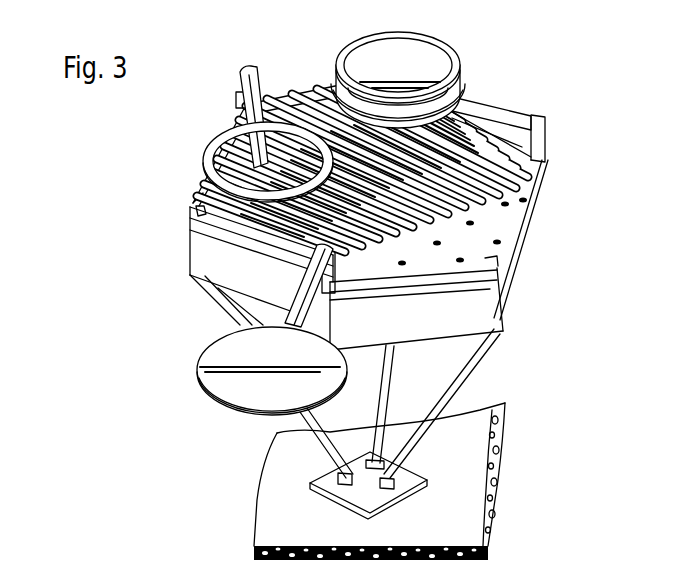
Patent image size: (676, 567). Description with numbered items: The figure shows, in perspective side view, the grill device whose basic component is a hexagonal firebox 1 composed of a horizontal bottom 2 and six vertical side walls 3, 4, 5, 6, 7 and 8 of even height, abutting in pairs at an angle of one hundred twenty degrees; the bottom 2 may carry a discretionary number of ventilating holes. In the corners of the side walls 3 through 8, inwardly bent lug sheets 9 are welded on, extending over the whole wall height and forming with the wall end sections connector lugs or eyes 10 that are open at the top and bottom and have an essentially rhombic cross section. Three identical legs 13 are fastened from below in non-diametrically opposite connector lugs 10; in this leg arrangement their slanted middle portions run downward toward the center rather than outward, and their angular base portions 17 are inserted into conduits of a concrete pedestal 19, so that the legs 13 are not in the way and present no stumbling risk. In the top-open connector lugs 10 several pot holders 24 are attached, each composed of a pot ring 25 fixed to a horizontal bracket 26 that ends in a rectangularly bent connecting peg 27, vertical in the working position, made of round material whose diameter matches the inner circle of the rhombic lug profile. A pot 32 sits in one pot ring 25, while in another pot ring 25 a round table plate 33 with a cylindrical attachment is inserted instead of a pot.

The firebox 1 is at (194, 176).
The bottom 2 is at (503, 228).
The side wall 3 is at (547, 213).
The side wall 4 is at (490, 313).
The side wall 5 is at (200, 262).
The side wall 6 is at (200, 183).
The side wall 7 is at (313, 100).
The side wall 8 is at (494, 127).
The lug sheet 9 is at (190, 226).
The connector lug 10 is at (200, 210).
The leg 13 is at (448, 386).
The base portion 17 is at (347, 497).
The concrete pedestal 19 is at (413, 473).
The pot holder 24 is at (484, 88).
The pot ring 25 is at (460, 72).
The bracket 26 is at (520, 113).
The connecting peg 27 is at (544, 137).
The pot 32 is at (401, 46).
The round table plate 33 is at (210, 357).